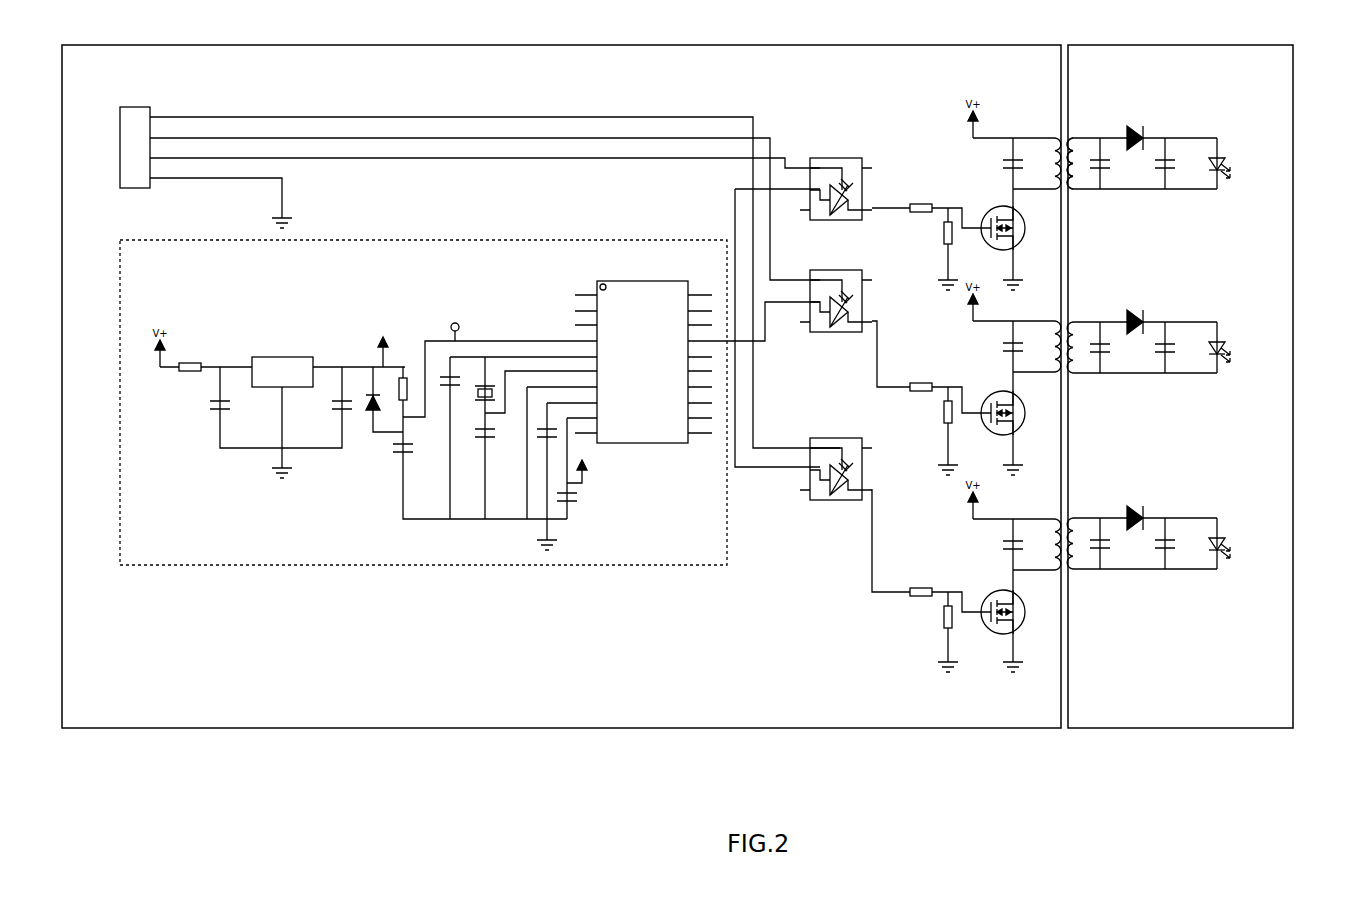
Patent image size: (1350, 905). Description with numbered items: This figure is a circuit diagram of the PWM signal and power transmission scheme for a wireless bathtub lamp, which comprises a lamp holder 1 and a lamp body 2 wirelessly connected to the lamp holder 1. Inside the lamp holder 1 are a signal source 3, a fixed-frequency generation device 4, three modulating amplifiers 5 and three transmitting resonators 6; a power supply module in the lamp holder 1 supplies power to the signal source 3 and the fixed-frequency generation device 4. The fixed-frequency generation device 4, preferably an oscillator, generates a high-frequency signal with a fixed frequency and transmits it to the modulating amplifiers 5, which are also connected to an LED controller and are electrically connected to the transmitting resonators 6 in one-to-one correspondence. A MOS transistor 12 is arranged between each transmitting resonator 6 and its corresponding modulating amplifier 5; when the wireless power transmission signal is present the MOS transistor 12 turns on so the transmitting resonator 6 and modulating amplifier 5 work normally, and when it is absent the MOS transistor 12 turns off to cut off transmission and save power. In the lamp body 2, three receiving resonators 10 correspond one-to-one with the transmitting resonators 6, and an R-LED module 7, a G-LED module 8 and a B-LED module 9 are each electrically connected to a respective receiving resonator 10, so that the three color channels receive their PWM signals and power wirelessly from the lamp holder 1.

The lamp holder 1 is at (620, 728).
The lamp body 2 is at (1292, 240).
The signal source 3 is at (150, 188).
The fixed-frequency generation device 4 is at (455, 566).
The modulating amplifier 5 is at (828, 500).
The transmitting resonator 6 is at (1040, 137).
The R-LED module 7 is at (1219, 158).
The G-LED module 8 is at (1222, 343).
The B-LED module 9 is at (1222, 540).
The receiving resonator 10 is at (1080, 138).
The MOS transistor 12 is at (985, 212).